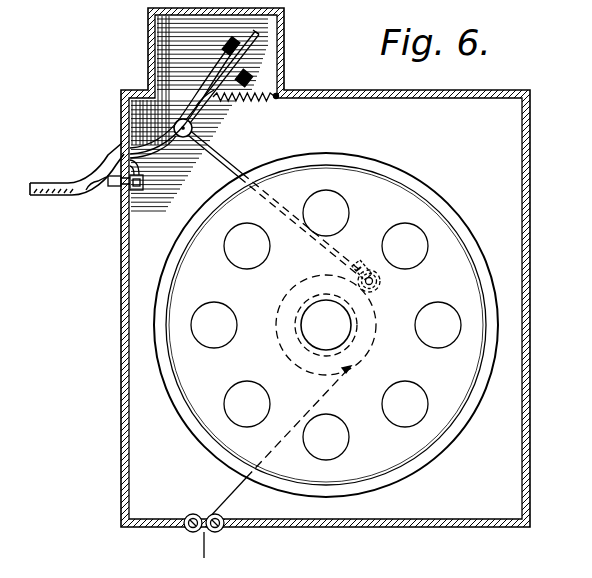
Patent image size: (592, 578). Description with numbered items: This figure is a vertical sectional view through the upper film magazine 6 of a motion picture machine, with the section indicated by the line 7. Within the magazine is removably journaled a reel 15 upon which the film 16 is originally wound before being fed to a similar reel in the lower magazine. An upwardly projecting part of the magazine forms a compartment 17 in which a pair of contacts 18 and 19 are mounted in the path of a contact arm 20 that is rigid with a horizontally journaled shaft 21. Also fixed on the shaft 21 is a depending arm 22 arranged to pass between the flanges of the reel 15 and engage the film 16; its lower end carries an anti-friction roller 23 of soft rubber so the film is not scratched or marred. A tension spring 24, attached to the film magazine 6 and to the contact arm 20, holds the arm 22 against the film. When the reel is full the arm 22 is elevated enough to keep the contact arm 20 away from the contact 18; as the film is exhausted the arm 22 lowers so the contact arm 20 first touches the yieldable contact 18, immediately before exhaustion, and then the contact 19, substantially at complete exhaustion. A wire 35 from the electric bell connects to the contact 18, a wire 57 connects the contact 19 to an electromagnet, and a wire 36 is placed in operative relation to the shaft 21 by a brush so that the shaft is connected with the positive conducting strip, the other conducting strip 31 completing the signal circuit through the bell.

The upper film magazine 6 is at (530, 192).
The section line 7-7 / conduit 7 is at (163, 12).
The reel 15 is at (478, 265).
The film 16 is at (231, 494).
The compartment 17 is at (263, 37).
The contact 18 is at (241, 42).
The contact 19 is at (248, 75).
The contact arm 20 is at (258, 46).
The shaft 21 is at (191, 140).
The depending arm 22 is at (242, 163).
The anti-friction roller 23 is at (381, 283).
The tension spring 24 is at (279, 96).
The conducting strip 31 is at (170, 140).
The wire 35 is at (208, 80).
The wire 36 is at (77, 176).
The wire 57 is at (201, 107).